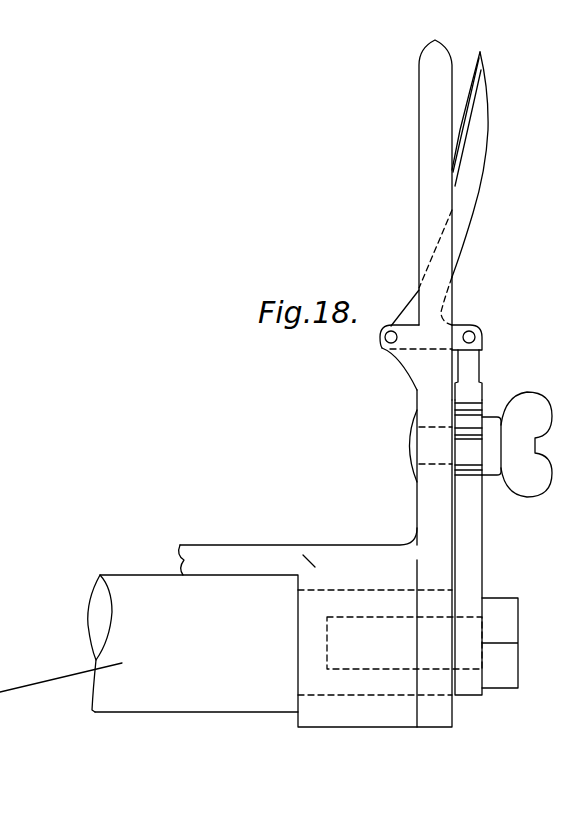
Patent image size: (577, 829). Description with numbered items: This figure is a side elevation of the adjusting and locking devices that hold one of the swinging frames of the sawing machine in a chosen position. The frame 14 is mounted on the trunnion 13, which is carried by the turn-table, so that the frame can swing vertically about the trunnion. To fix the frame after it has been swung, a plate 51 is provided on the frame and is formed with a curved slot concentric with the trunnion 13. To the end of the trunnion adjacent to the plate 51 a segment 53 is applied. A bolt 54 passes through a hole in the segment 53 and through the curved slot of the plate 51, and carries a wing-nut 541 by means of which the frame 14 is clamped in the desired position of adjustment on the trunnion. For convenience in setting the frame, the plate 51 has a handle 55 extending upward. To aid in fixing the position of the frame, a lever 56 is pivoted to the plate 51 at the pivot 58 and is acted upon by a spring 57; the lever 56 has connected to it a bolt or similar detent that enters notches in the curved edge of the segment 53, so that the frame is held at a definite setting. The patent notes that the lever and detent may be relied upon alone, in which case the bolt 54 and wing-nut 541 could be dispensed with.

The trunnion 13 is at (330, 688).
The frame 14 is at (210, 545).
The plate 51 is at (435, 502).
The segment 53 is at (485, 547).
The bolt 54 is at (407, 438).
The wing-nut 541 is at (530, 393).
The handle 55 is at (419, 192).
The lever 56 is at (488, 135).
The spring 57 is at (465, 112).
The pivot lug 58 is at (483, 352).